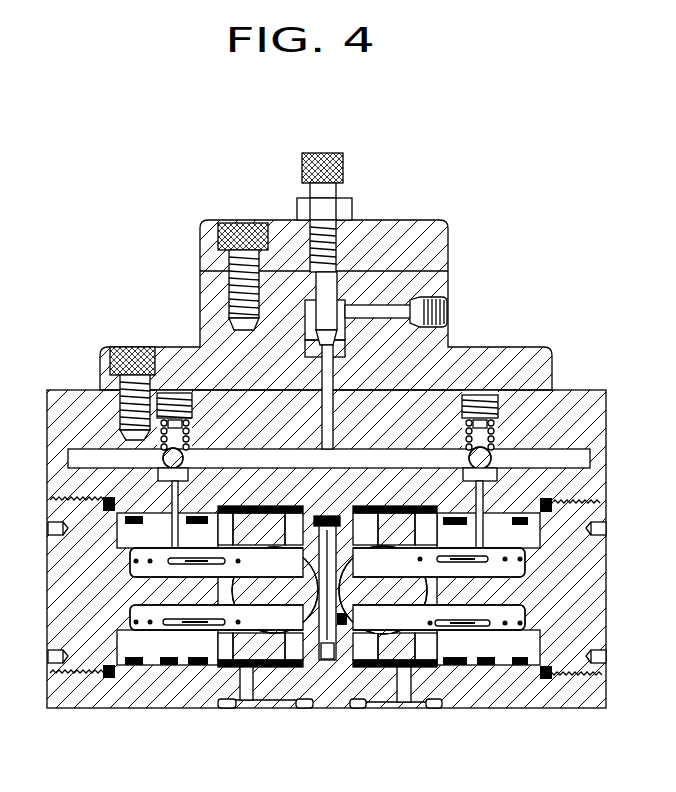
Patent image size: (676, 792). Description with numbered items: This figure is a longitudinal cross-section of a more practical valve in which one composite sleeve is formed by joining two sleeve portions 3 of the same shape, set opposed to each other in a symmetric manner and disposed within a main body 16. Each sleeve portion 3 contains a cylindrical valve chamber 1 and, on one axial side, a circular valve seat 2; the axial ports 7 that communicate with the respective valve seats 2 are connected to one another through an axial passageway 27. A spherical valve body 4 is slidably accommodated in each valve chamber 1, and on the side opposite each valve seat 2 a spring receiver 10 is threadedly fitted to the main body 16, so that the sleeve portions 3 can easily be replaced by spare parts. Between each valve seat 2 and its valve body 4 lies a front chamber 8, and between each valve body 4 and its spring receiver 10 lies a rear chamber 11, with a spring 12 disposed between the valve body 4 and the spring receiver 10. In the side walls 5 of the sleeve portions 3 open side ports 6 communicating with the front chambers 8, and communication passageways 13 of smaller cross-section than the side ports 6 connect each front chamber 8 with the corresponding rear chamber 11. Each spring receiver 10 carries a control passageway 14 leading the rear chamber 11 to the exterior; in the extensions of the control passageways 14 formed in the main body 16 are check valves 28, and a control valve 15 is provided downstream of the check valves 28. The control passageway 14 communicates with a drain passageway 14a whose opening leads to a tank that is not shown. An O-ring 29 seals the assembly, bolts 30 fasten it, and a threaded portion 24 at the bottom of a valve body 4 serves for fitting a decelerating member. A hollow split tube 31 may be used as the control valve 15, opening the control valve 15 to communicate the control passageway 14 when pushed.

The valve chamber 1 is at (170, 672).
The valve seat 2 is at (312, 706).
The sleeve portion 3 is at (203, 668).
The spherical valve body 4 is at (226, 514).
The side wall 5 is at (238, 706).
The side port 6 is at (250, 695).
The axial port 7 is at (300, 580).
The front chamber 8 is at (327, 516).
The spring receiver 10 is at (55, 547).
The rear chamber 11 is at (178, 506).
The spring 12 is at (518, 568).
The communication passageway 13 is at (243, 560).
The control passageway 14 is at (320, 455).
The drain passageway 14a is at (448, 298).
The control valve 15 is at (358, 275).
The main body 16 is at (612, 375).
The threaded portion 24 is at (604, 680).
The axial passageway 27 is at (346, 688).
The check valve 28 is at (498, 396).
The O-ring 29 is at (560, 515).
The bolt 30 is at (240, 225).
The hollow split tube 31 is at (132, 572).